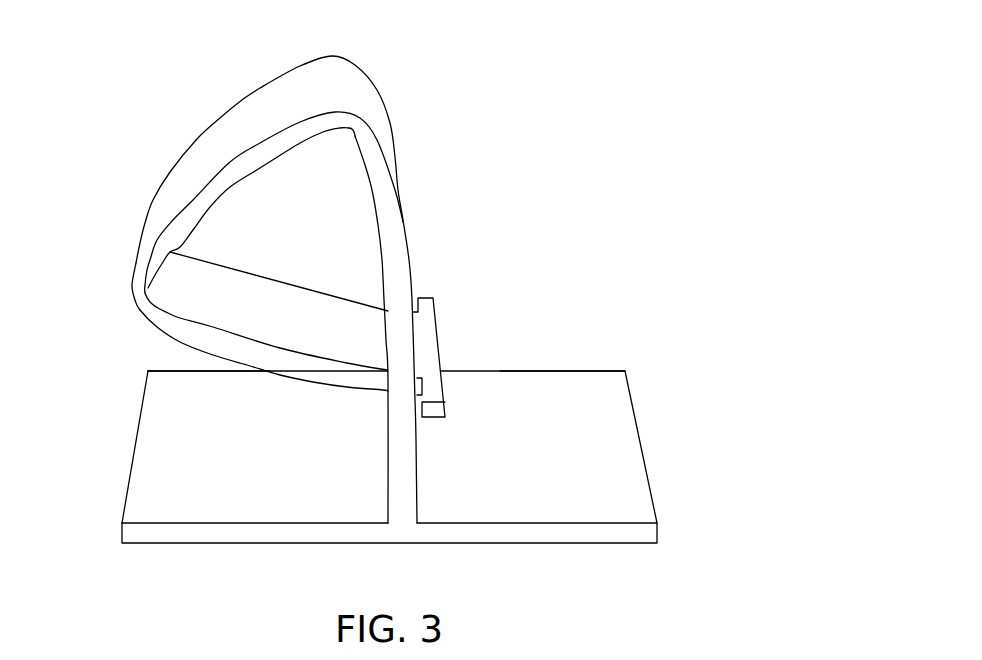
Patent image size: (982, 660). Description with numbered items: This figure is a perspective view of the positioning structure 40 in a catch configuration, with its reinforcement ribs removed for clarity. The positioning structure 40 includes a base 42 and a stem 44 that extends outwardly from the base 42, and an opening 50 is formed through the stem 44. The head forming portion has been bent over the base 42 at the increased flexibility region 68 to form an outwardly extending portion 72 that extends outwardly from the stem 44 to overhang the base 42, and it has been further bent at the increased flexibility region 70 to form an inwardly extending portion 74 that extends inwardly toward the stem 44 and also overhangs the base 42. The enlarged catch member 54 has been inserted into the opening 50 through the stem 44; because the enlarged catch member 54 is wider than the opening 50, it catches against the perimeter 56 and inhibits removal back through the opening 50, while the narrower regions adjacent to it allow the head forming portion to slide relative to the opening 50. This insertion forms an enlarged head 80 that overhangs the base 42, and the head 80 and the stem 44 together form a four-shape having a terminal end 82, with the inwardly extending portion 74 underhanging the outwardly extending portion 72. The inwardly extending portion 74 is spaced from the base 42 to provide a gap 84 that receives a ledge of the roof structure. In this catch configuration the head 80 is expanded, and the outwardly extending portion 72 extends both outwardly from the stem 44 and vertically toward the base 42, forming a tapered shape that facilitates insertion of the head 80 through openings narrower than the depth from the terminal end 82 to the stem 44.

The positioning structure 40 is at (561, 174).
The base 42 is at (633, 463).
The stem 44 is at (411, 474).
The opening 50 is at (423, 326).
The enlarged catch member 54 is at (436, 361).
The perimeter 56 is at (390, 353).
The increased flexibility region 68 is at (351, 131).
The increased flexibility region 70 is at (146, 294).
The outwardly extending portion 72 is at (242, 106).
The inwardly extending portion 74 is at (228, 362).
The head 80 is at (127, 133).
The terminal end 82 is at (131, 277).
The gap 84 is at (277, 412).